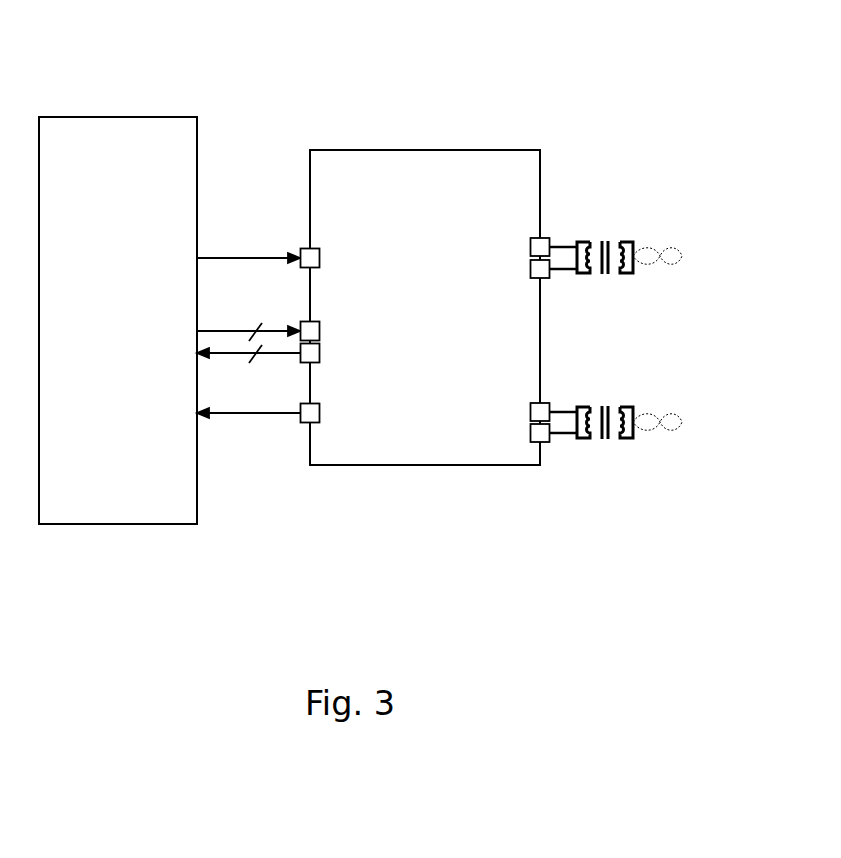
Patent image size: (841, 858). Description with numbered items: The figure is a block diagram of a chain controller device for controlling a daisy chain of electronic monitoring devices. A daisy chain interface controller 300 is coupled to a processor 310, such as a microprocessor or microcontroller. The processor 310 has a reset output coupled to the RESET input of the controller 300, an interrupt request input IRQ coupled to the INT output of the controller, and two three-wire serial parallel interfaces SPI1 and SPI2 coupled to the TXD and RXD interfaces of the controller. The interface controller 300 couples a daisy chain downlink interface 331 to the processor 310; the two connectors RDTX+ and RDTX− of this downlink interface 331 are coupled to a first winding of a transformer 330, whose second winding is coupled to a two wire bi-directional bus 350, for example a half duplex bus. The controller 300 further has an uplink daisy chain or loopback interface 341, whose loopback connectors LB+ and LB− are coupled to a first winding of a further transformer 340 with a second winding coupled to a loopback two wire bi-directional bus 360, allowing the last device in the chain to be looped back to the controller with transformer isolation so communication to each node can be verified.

The daisy chain interface controller 300 is at (422, 149).
The processor 310 is at (118, 117).
The transformer 330 is at (600, 237).
The daisy chain downlink interface 331 is at (549, 237).
The transformer 340 is at (608, 443).
The loopback interface 341 is at (545, 443).
The two wire bi-directional bus 350 is at (658, 265).
The loopback two wire bi-directional bus 360 is at (658, 430).